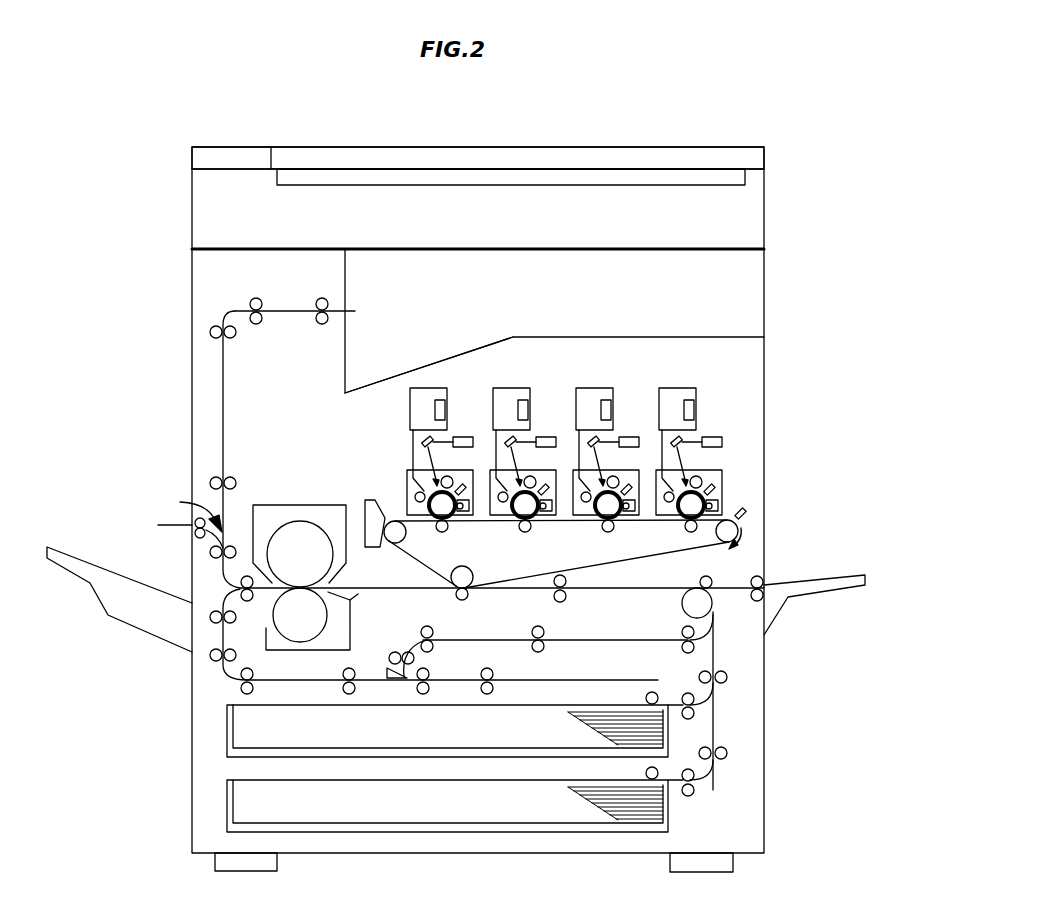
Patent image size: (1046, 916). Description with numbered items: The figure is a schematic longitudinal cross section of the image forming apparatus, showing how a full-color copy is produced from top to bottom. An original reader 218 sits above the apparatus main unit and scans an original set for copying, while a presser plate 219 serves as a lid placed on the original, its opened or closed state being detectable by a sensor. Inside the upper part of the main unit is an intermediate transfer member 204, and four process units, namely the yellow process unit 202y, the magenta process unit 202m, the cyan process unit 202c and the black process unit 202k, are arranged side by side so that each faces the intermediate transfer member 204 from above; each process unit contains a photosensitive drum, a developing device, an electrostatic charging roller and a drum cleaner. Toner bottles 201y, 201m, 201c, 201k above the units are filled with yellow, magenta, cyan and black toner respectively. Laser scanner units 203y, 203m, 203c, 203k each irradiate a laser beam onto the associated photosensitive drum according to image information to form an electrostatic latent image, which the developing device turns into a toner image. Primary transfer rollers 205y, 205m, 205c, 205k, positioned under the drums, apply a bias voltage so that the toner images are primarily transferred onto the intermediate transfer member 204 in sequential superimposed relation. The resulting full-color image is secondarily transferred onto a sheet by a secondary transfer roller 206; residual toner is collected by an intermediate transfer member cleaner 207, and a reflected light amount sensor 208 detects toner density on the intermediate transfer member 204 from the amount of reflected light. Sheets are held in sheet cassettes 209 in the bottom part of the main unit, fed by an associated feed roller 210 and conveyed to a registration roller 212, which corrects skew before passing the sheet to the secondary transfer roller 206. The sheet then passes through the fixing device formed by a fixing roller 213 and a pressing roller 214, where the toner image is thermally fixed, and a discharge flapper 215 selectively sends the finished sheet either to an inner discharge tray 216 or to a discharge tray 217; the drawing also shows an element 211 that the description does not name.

The toner bottle 201y is at (409, 412).
The toner bottle 201m is at (507, 388).
The toner bottle 201c is at (590, 388).
The toner bottle 201k is at (668, 388).
The yellow process unit 202y is at (405, 490).
The magenta process unit 202m is at (556, 470).
The cyan process unit 202c is at (639, 470).
The black process unit 202k is at (723, 470).
The laser scanner unit 203y is at (462, 437).
The laser scanner unit 203m is at (545, 437).
The laser scanner unit 203c is at (628, 437).
The laser scanner unit 203k is at (735, 442).
The intermediate transfer member 204 is at (660, 555).
The primary transfer roller 205y is at (444, 533).
The primary transfer roller 205m is at (526, 533).
The primary transfer roller 205c is at (608, 533).
The primary transfer roller 205k is at (691, 533).
The secondary transfer roller 206 is at (451, 581).
The intermediate transfer member cleaner 207 is at (365, 501).
The reflected light amount sensor 208 is at (748, 511).
The sheet cassette 209 is at (452, 818).
The feed roller 210 is at (650, 773).
The sheet discharge tray 211 is at (805, 598).
The registration roller 212 is at (566, 600).
The fixing roller 213 is at (278, 520).
The pressing roller 214 is at (327, 624).
The discharge flapper 215 is at (182, 502).
The inner discharge tray 216 is at (423, 364).
The discharge tray 217 is at (140, 632).
The original reader 218 is at (680, 185).
The presser plate 219 is at (764, 153).